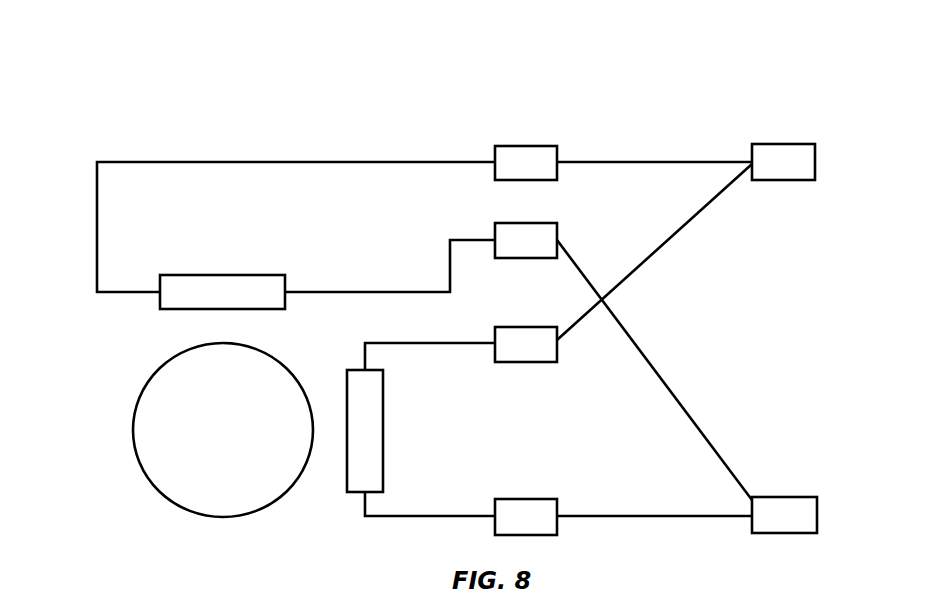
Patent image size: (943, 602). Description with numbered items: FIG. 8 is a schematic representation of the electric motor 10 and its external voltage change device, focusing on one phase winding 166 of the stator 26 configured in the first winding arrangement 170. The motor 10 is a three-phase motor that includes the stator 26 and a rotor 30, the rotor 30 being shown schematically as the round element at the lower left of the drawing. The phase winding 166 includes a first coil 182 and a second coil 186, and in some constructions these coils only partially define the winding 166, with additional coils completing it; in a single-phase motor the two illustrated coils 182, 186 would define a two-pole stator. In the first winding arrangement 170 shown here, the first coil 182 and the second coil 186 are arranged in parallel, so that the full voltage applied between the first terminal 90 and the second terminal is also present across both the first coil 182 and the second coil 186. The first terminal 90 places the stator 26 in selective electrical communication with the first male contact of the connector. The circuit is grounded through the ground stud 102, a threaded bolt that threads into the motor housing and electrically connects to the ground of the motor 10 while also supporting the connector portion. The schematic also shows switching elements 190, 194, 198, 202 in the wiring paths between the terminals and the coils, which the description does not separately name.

The electric motor 10 is at (75, 507).
The stator 26 is at (352, 358).
The rotor 30 is at (206, 495).
The first terminal 90 is at (793, 150).
The ground stud 102 is at (805, 510).
The phase winding 166 is at (352, 100).
The first winding arrangement 170 is at (622, 122).
The first coil 182 is at (213, 285).
The second coil 186 is at (372, 410).
The valve 190 is at (522, 158).
The valve 194 is at (533, 238).
The valve 198 is at (530, 335).
The valve 202 is at (525, 512).